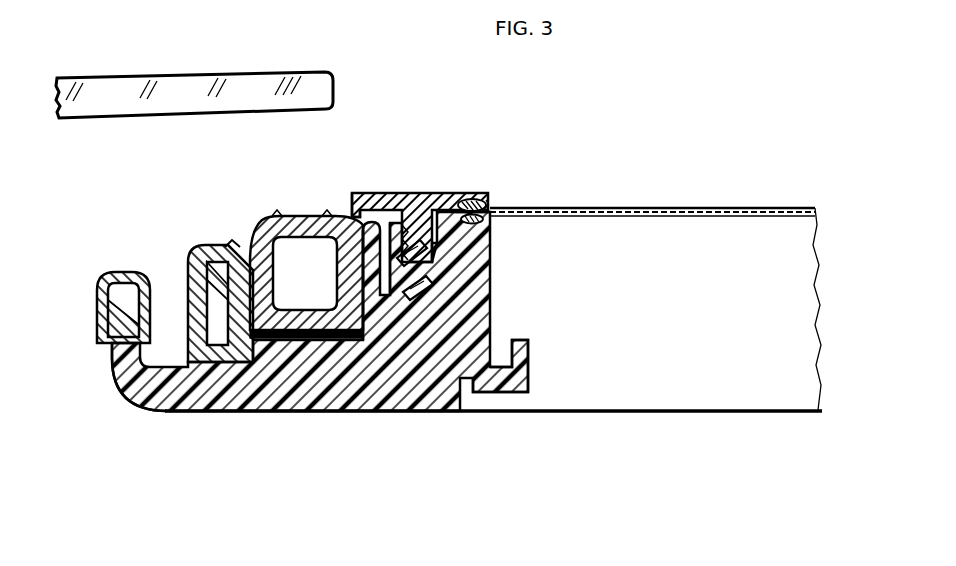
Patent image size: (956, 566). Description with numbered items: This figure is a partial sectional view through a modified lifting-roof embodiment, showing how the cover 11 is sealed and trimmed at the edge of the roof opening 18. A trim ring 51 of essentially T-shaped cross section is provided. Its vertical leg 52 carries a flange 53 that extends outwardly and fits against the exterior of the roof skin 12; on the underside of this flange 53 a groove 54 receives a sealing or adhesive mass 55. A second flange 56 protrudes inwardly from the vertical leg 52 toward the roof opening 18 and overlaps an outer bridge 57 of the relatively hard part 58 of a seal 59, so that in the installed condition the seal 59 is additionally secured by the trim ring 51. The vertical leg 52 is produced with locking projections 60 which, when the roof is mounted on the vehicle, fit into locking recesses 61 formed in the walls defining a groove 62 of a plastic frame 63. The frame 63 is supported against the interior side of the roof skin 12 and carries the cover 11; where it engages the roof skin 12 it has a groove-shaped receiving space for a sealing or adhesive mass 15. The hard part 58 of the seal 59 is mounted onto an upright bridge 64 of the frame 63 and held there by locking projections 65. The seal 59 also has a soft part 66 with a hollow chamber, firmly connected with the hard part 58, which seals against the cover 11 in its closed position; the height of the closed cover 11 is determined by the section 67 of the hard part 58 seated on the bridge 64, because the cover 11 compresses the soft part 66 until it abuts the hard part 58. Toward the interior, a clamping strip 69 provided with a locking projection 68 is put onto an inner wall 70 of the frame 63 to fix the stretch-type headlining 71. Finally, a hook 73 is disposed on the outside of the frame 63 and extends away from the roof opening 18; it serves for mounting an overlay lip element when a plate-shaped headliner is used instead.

The cover 11 is at (196, 88).
The roof skin 12 is at (688, 207).
The sealing or adhesive mass 15 is at (470, 216).
The roof opening 18 is at (64, 228).
The trim ring 51 is at (410, 210).
The vertical leg 52 is at (405, 280).
The flange 53 is at (487, 205).
The groove 54 is at (463, 200).
The sealing or adhesive mass 55 is at (477, 204).
The flange 56 is at (360, 198).
The outer bridge 57 is at (384, 305).
The hard part 58 is at (298, 380).
The seal 59 is at (250, 218).
The locking projections 60 is at (440, 258).
The locking recesses 61 is at (440, 300).
The groove 62 is at (425, 300).
The plastic frame 63 is at (240, 385).
The upright bridge 64 is at (207, 258).
The locking projections 65 is at (190, 290).
The soft part 66 is at (300, 225).
The section 67 is at (228, 252).
The locking projection 68 is at (100, 310).
The clamping strip 69 is at (100, 288).
The inner wall 70 is at (106, 342).
The stretch-type headlining 71 is at (648, 412).
The hook 73 is at (510, 390).